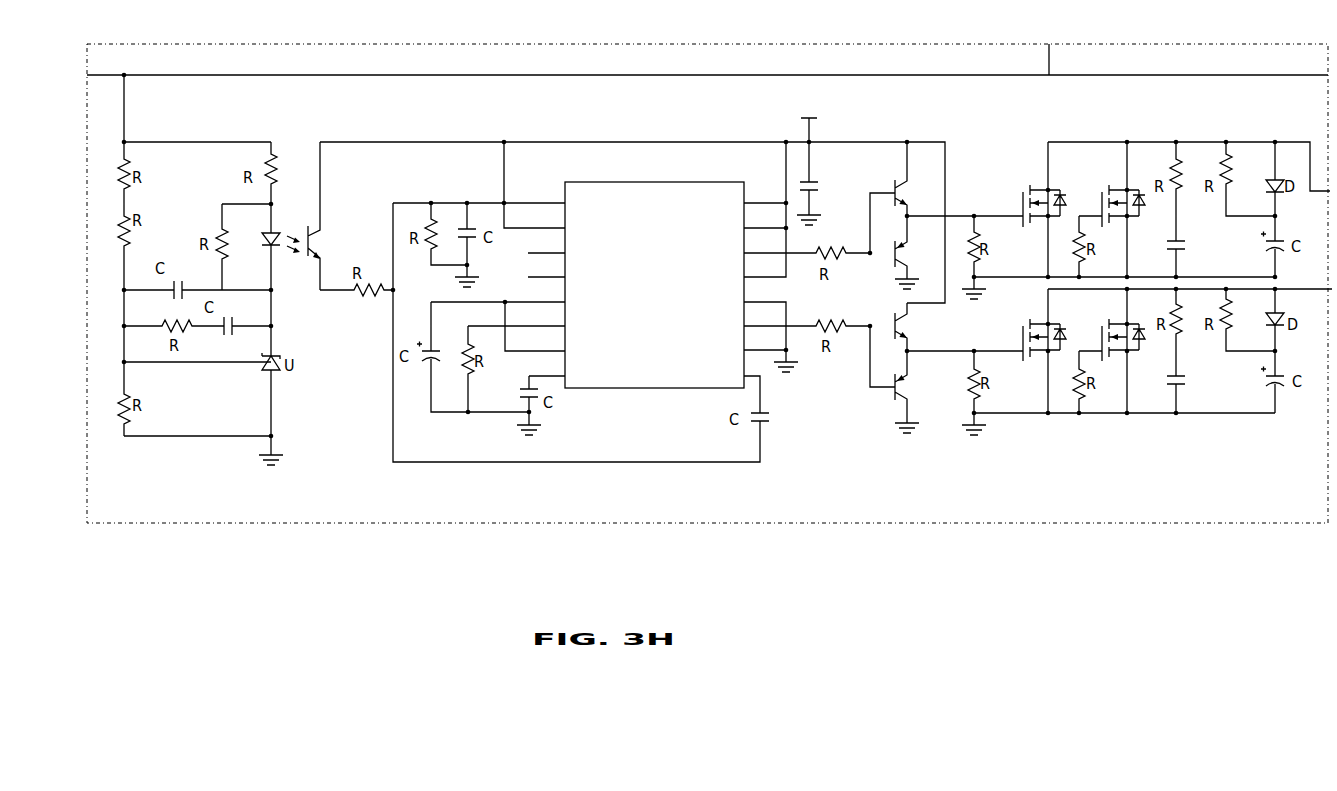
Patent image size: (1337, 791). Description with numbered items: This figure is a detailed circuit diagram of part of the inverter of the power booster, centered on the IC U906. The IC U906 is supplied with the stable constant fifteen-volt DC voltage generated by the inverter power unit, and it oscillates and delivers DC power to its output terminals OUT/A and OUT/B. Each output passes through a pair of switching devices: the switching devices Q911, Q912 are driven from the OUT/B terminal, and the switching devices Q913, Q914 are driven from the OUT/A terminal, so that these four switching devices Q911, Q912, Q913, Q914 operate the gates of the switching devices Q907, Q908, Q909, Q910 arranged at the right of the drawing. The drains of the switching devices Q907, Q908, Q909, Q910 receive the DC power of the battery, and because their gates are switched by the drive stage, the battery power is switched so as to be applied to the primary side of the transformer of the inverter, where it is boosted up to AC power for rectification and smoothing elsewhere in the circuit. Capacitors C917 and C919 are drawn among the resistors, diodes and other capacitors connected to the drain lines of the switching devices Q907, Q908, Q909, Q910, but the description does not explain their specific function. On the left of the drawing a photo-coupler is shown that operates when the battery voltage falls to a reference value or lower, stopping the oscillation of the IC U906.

The IC U906 is at (654, 275).
The switching device Q911 is at (879, 179).
The switching device Q912 is at (879, 260).
The switching device Q913 is at (923, 327).
The switching device Q914 is at (923, 392).
The switching device Q907 is at (1105, 194).
The switching device Q908 is at (1026, 196).
The switching device Q909 is at (1107, 332).
The switching device Q910 is at (1026, 330).
The capacitor C917 is at (1198, 246).
The capacitor C919 is at (1198, 379).